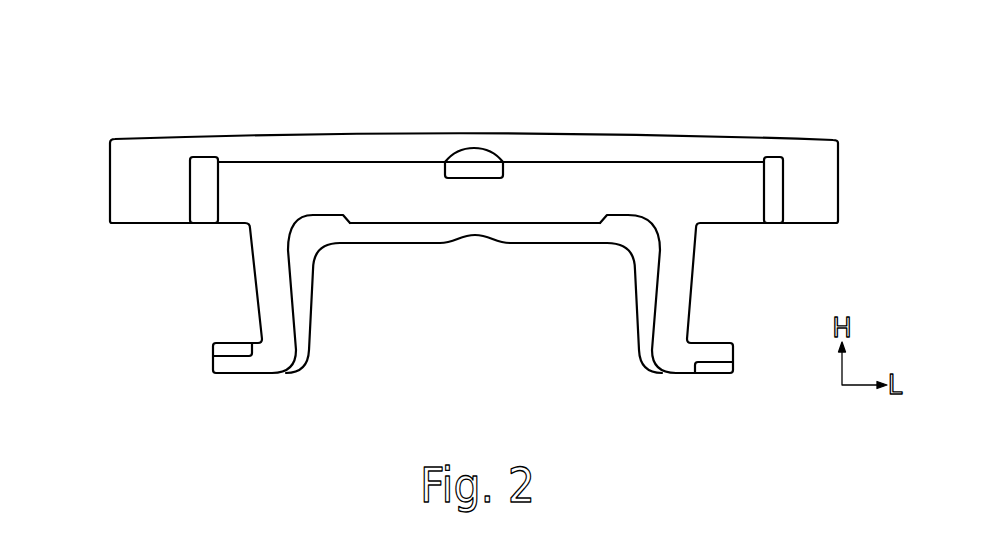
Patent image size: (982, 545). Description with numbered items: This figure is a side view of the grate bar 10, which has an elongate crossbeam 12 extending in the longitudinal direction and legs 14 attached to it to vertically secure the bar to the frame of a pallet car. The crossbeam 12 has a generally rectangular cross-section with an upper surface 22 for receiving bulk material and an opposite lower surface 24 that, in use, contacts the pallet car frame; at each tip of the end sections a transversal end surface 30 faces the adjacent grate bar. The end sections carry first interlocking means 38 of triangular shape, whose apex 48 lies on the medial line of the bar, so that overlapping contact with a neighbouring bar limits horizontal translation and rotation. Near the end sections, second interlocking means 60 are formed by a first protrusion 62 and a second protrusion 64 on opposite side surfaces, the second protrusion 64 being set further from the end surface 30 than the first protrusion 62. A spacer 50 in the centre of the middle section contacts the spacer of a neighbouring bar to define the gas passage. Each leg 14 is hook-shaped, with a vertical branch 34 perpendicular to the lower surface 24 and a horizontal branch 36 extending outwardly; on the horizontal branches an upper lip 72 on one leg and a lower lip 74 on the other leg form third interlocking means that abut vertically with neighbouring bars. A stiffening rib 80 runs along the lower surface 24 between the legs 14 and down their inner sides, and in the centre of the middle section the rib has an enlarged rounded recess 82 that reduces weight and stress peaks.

The grate bar 10 is at (612, 117).
The crossbeam 12 is at (562, 208).
The legs 14 is at (627, 305).
The upper surface 22 is at (390, 133).
The lower surface 24 is at (416, 234).
The transversal end surfaces 30 is at (125, 183).
The vertical branch 34 is at (272, 332).
The horizontal branch 36 is at (247, 363).
The first interlocking means 38 is at (108, 138).
The apex 48 is at (830, 140).
The spacer 50 is at (470, 160).
The second interlocking means 60 is at (770, 243).
The first protrusion 62 is at (773, 212).
The second protrusion 64 is at (205, 210).
The upper lip 72 is at (232, 348).
The lower lip 74 is at (720, 370).
The stiffening rib 80 is at (373, 235).
The recess 82 is at (479, 237).